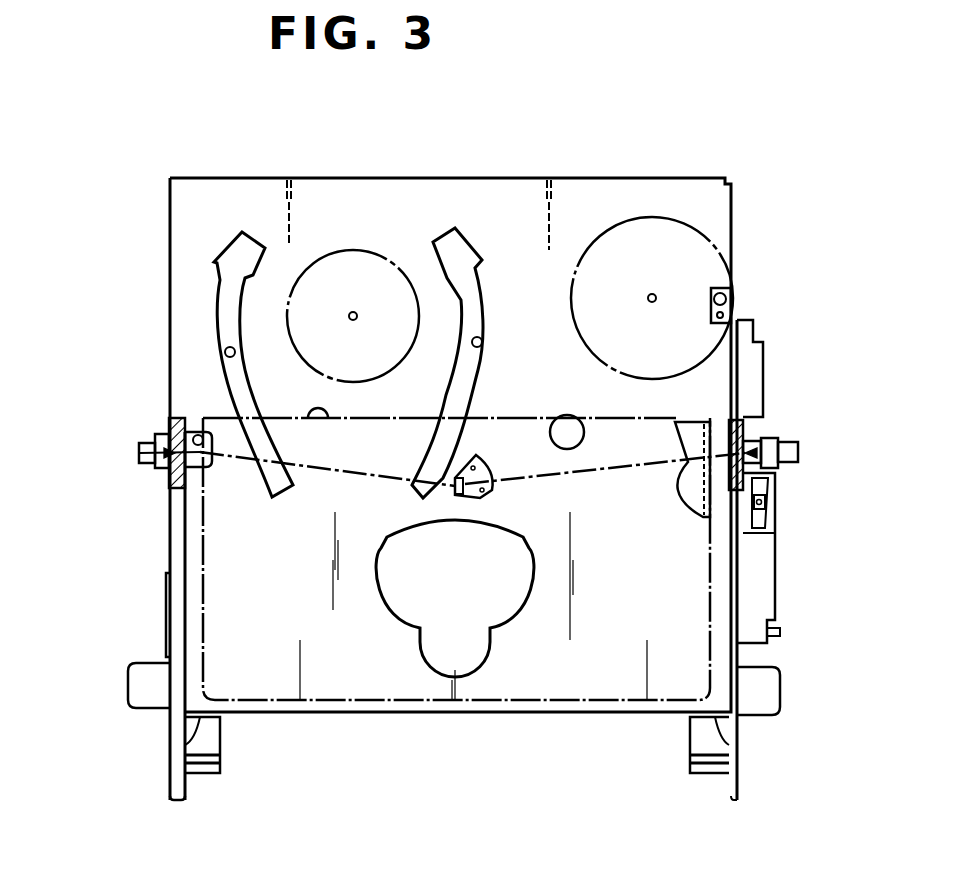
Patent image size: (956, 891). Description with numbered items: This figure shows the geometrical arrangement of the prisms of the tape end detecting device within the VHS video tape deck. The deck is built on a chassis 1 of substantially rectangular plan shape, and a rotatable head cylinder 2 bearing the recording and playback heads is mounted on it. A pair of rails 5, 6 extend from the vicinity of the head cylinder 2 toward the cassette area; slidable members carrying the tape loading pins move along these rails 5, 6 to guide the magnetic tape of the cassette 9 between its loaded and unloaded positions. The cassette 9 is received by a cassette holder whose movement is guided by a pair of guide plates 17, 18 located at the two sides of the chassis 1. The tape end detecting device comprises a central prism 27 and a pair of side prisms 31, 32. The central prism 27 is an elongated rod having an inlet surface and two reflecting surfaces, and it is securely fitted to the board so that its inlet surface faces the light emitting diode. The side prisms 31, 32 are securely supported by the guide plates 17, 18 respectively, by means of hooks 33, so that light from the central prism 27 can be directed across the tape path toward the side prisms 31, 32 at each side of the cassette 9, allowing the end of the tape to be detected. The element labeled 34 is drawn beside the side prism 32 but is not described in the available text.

The cassette housing body 1 is at (592, 178).
The tape reel 2 is at (372, 250).
The left tension arm 5 is at (230, 352).
The right tension arm 6 is at (478, 340).
The guide pin 9 is at (324, 424).
The left side frame plate 17 is at (173, 560).
The right side frame plate 18 is at (737, 558).
The tape guide 27 is at (458, 497).
The support bracket 31 is at (142, 450).
The adjusting bolt 32 is at (790, 462).
The lock nut 33 is at (136, 460).
The guide block 34 is at (687, 487).